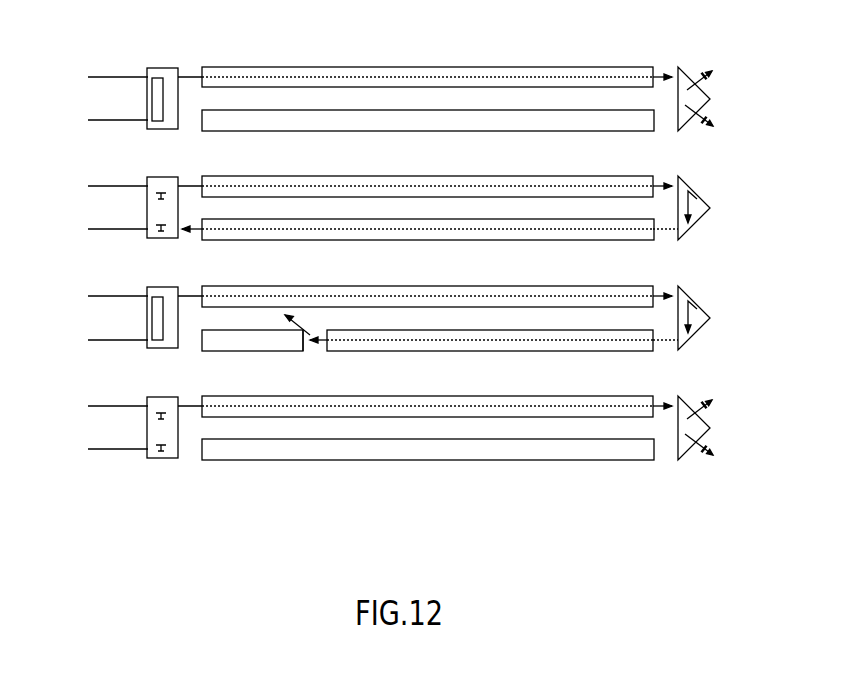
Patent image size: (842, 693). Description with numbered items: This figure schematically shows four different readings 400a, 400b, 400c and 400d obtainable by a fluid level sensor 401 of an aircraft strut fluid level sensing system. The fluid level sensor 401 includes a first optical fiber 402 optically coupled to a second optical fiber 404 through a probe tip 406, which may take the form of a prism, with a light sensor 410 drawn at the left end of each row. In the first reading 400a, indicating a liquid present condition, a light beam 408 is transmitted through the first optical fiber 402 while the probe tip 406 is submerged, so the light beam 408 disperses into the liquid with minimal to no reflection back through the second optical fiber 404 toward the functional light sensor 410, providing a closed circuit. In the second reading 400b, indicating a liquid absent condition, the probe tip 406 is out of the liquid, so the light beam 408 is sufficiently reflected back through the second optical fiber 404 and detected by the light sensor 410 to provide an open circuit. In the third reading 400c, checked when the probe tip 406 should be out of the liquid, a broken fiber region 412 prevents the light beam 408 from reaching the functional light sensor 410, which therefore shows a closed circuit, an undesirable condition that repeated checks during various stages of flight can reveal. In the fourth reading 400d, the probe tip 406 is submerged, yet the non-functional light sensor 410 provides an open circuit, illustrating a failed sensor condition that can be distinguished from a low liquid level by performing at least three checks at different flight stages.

The first reading 400a is at (87, 70).
The second reading 400b is at (87, 180).
The third reading 400c is at (87, 290).
The fourth reading 400d is at (87, 400).
The fluid level sensor 401 is at (238, 50).
The first optical fiber 402 is at (383, 67).
The second optical fiber 404 is at (480, 131).
The probe tip 406 is at (687, 68).
The light beam 408 is at (662, 75).
The light sensor 410 is at (147, 128).
The broken fiber region 412 is at (300, 356).